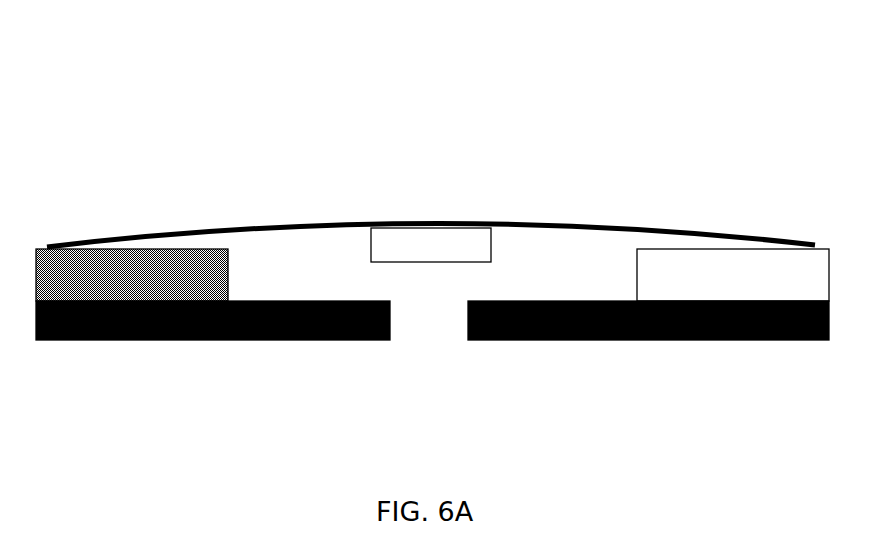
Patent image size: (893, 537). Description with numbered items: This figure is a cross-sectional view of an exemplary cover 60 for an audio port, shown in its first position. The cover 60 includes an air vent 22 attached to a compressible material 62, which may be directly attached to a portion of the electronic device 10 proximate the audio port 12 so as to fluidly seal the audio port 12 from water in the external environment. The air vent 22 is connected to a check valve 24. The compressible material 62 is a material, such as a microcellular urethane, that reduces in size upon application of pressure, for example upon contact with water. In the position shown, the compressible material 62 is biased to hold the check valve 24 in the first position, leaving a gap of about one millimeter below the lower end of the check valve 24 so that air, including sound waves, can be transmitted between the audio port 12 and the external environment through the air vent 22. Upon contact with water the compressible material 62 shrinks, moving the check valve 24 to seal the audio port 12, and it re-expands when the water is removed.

The cover 60 is at (226, 110).
The electronic device 10 is at (105, 342).
The audio port 12 is at (414, 337).
The compressible material 62 is at (103, 263).
The air vent 22 is at (300, 222).
The check valve 24 is at (431, 245).